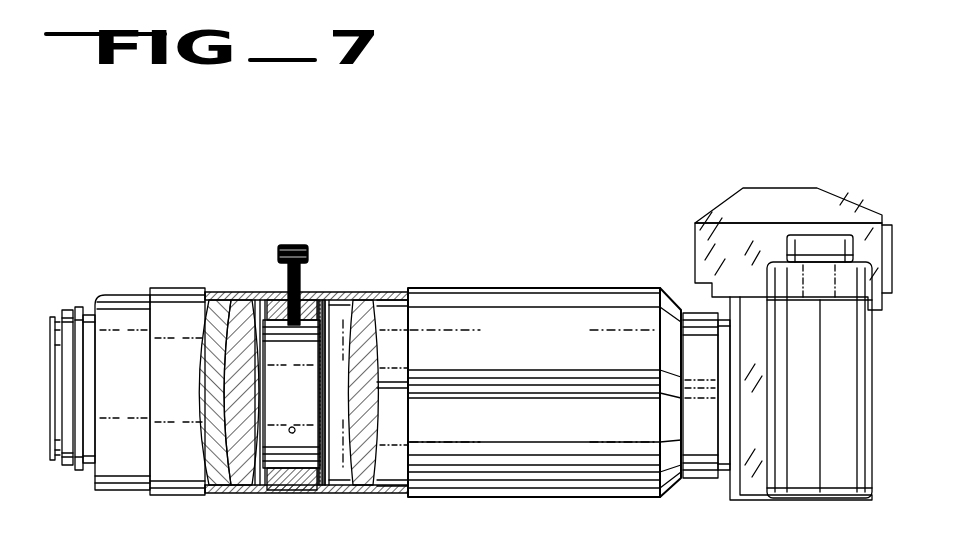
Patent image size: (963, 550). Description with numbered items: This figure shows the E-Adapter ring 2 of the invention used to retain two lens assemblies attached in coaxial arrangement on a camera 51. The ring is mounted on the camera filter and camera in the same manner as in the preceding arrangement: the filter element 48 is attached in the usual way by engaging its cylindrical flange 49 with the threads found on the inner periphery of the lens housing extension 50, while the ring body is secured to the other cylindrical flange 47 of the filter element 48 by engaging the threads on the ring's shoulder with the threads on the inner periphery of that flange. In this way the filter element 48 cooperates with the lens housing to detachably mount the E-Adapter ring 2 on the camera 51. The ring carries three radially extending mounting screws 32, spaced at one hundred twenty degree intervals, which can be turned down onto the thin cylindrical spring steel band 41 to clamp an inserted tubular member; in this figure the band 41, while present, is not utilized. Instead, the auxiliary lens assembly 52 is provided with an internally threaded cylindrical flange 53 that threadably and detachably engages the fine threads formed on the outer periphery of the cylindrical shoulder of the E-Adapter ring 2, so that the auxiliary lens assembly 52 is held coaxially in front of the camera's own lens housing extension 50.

The E-Adapter ring 2 is at (298, 497).
The mounting screws 32 is at (304, 270).
The thin cylindrical band 41 is at (298, 333).
The cylindrical flange 47 is at (321, 300).
The filter element 48 is at (328, 384).
The cylindrical flange 49 is at (332, 464).
The lens housing extension 50 is at (398, 360).
The camera 51 is at (766, 188).
The auxiliary lens assembly 52 is at (190, 282).
The internally threaded cylindrical flange 53 is at (262, 292).